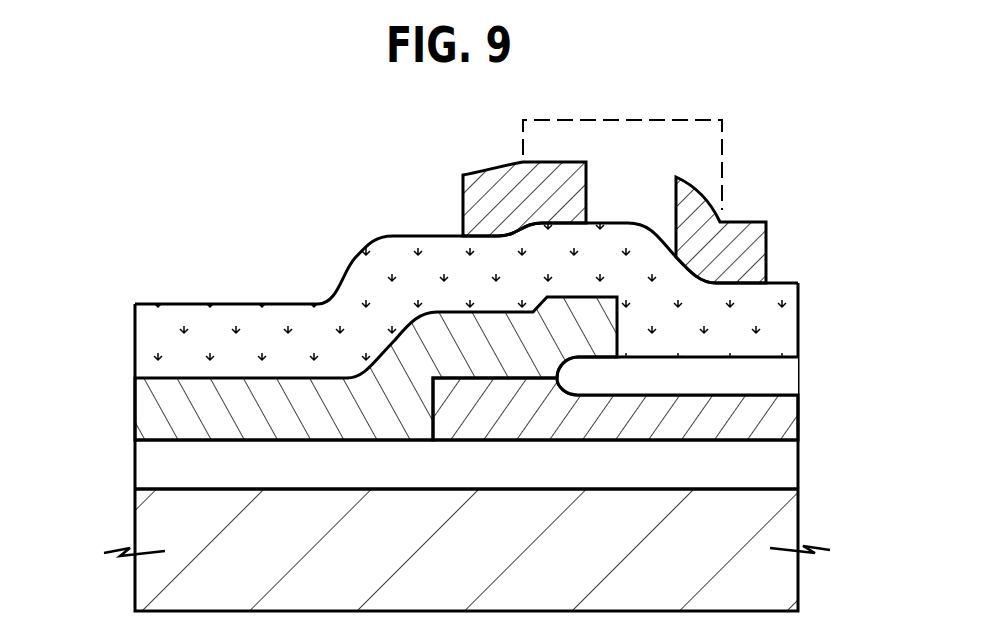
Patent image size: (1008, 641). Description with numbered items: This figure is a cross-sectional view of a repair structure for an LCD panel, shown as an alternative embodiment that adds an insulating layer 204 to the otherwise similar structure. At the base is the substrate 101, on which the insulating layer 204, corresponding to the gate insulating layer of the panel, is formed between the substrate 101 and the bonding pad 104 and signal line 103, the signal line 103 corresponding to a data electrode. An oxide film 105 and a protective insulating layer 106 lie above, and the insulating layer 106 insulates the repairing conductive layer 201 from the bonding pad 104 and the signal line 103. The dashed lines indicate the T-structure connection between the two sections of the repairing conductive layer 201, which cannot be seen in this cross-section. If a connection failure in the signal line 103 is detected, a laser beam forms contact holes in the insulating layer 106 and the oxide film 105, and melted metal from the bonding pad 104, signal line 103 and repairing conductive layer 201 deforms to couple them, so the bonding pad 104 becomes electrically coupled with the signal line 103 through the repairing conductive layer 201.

The substrate 101 is at (788, 510).
The insulating layer 204 is at (788, 462).
The signal line 103 is at (788, 412).
The bonding pad 104 is at (145, 414).
The oxide film 105 is at (786, 375).
The insulating layer 106 is at (786, 320).
The repairing conductive layer 201 is at (463, 208).